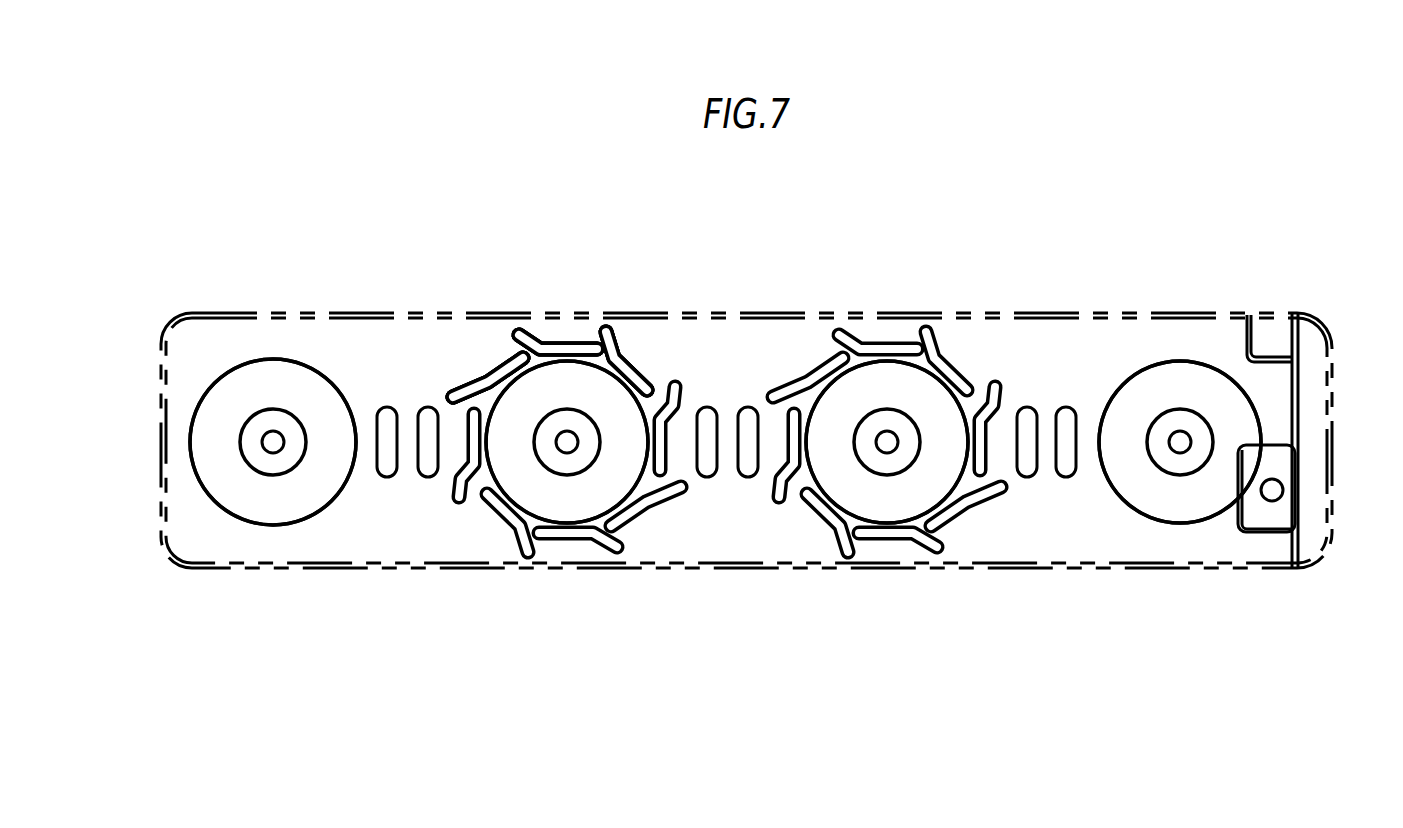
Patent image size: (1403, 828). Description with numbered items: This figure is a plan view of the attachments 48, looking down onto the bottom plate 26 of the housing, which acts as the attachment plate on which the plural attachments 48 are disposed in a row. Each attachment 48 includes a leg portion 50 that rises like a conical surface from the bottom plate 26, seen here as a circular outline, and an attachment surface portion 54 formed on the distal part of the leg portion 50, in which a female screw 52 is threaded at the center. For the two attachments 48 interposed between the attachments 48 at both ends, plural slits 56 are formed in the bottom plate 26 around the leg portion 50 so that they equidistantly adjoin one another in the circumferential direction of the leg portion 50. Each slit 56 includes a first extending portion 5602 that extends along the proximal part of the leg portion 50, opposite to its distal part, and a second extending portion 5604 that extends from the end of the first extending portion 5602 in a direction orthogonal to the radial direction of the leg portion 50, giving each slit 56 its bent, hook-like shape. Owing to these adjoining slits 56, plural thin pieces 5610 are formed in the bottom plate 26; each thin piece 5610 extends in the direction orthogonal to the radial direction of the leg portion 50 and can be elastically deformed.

The bottom plate 26 is at (363, 347).
The attachment 48 is at (223, 495).
The leg portion 50 is at (267, 502).
The female screw 52 is at (267, 437).
The attachment surface portion 54 is at (283, 460).
The slit 56 is at (562, 343).
The first extending portion 5602 is at (577, 345).
The second extending portion 5604 is at (535, 332).
The thin piece 5610 is at (492, 345).